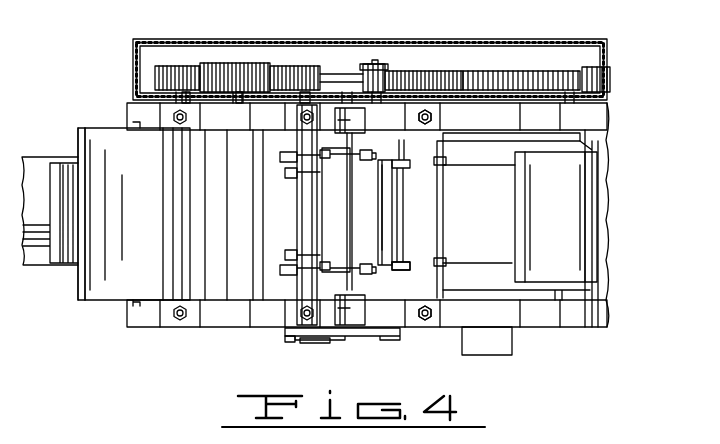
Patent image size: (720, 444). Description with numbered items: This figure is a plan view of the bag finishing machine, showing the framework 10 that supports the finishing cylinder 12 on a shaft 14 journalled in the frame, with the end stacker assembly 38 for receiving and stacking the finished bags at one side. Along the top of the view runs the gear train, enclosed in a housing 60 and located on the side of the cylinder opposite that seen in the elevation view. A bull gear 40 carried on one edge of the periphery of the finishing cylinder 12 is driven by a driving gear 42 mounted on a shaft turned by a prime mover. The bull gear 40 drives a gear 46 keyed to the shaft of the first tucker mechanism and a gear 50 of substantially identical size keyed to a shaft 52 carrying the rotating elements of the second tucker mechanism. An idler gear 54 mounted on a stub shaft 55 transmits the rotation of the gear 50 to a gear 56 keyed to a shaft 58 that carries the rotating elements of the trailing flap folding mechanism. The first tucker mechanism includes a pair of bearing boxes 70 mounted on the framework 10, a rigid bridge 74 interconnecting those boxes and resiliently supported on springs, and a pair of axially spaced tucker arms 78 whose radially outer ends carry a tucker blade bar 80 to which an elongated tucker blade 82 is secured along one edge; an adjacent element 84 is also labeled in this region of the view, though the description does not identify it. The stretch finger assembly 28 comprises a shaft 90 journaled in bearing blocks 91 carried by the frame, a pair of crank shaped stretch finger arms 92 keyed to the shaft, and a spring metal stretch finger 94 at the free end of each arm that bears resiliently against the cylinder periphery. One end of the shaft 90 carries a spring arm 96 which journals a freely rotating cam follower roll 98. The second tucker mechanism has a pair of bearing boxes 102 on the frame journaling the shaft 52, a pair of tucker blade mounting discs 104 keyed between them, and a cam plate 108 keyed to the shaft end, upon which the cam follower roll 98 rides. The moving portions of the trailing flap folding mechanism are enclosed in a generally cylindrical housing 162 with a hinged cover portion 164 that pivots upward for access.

The framework 10 is at (612, 122).
The finishing cylinder 12 is at (492, 282).
The shaft 14 is at (372, 64).
The stretch finger assembly 28 is at (562, 202).
The end stacker assembly 38 is at (66, 275).
The bull gear 40 is at (376, 68).
The driving gear 42 is at (608, 70).
The gear 46 is at (430, 72).
The gear 50 is at (312, 68).
The shaft 52 is at (302, 100).
The idler gear 54 is at (258, 66).
The stub shaft 55 is at (239, 103).
The gear 56 is at (180, 66).
The shaft 58 is at (186, 103).
The housing 60 is at (522, 42).
The bearing boxes 70 is at (434, 118).
The rigid bridge 74 is at (443, 148).
The tucker arms 78 is at (446, 163).
The tucker blade bar 80 is at (405, 152).
The tucker blade 82 is at (388, 160).
The shaft 84 is at (443, 212).
The shaft 90 is at (348, 212).
The bearing blocks 91 is at (355, 119).
The stretch finger arms 92 is at (340, 160).
The stretch finger 94 is at (280, 156).
The spring arm 96 is at (340, 336).
The cam follower roll 98 is at (306, 343).
The bearing boxes 102 is at (297, 120).
The tucker blade mounting discs 104 is at (285, 174).
The cam plate 108 is at (287, 342).
The housing 162 is at (110, 121).
The cover portion 164 is at (144, 182).